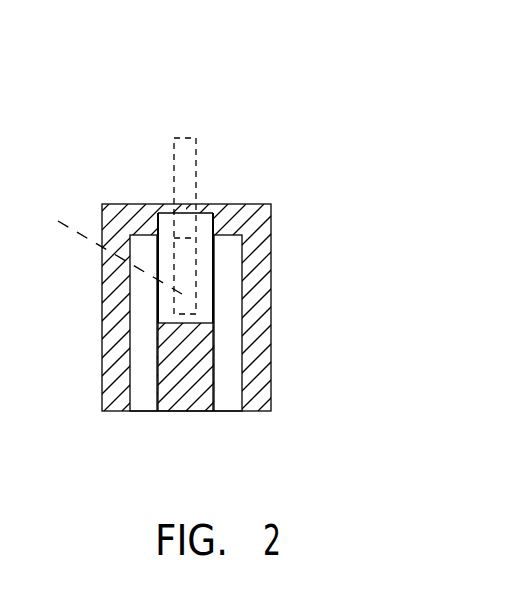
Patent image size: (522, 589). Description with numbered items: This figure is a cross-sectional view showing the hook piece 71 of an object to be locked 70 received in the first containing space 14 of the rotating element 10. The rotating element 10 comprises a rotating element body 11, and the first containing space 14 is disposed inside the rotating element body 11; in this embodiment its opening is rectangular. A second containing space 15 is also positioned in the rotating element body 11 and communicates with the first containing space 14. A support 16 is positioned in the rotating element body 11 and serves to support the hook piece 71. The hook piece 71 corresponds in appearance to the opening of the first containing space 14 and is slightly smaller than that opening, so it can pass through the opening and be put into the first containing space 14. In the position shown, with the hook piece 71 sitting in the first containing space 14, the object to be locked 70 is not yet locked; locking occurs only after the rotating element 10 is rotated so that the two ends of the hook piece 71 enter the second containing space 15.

The rotating element 10 is at (326, 234).
The rotating element body 11 is at (257, 365).
The first containing space 14 is at (206, 238).
The second containing space 15 is at (142, 250).
The support 16 is at (187, 395).
The object to be locked 70 is at (208, 105).
The hook piece 71 is at (106, 245).